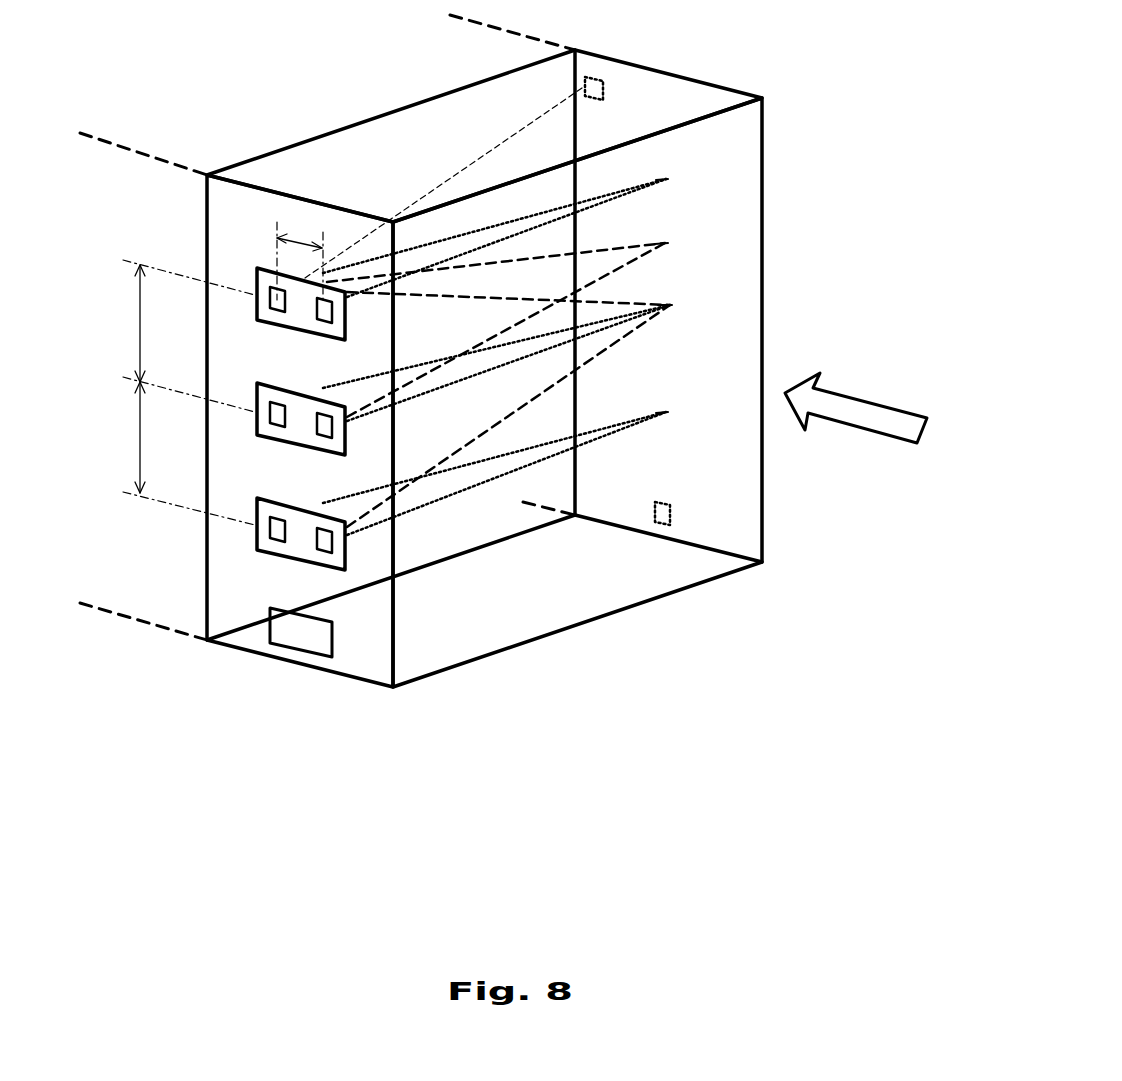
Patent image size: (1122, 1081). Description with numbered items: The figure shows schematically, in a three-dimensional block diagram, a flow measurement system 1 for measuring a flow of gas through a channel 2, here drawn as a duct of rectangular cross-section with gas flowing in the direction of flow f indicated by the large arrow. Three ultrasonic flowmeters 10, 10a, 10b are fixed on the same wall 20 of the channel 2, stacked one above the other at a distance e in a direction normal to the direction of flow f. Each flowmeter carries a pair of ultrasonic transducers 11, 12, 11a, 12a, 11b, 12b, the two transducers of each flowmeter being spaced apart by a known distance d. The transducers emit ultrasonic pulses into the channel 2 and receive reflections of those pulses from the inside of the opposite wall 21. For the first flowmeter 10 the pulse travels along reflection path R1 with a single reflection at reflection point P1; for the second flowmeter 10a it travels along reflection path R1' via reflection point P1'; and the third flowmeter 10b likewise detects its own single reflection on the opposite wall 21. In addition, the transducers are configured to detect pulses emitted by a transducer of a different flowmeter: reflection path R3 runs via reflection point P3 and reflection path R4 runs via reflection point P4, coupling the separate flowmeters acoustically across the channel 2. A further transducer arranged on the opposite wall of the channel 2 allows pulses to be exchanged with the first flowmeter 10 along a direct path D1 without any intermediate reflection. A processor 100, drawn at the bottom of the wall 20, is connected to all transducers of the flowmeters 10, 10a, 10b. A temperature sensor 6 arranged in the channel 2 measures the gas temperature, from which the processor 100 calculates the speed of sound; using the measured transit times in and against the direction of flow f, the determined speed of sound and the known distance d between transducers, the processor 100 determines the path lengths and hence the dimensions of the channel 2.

The flow measurement system 1 is at (206, 687).
The channel 2 is at (391, 123).
The temperature sensor 6 is at (669, 514).
The ultrasonic flowmeter 10 is at (265, 302).
The ultrasonic flowmeter 10a is at (263, 418).
The ultrasonic flowmeter 10b is at (263, 531).
The ultrasonic transducer 11 is at (277, 306).
The ultrasonic transducer 12 is at (323, 316).
The ultrasonic transducer 11a is at (278, 422).
The ultrasonic transducer 12a is at (323, 431).
The ultrasonic transducer 11b is at (278, 538).
The ultrasonic transducer 12b is at (323, 546).
The wall 20 is at (300, 450).
The opposite wall 21 is at (606, 392).
The processor 100 is at (295, 638).
The direct path D1 is at (443, 183).
The reflection point P1 is at (683, 177).
The reflection point P3 is at (682, 242).
The reflection point P1' is at (695, 305).
The reflection point P4 is at (695, 334).
The reflection path R1 is at (494, 238).
The reflection path R3 is at (513, 330).
The reflection path R4 is at (508, 409).
The reflection path R1' is at (496, 363).
The distance between ultrasonic transducers d is at (300, 258).
The distance between flowmeters e is at (186, 392).
The direction of flow f is at (946, 445).